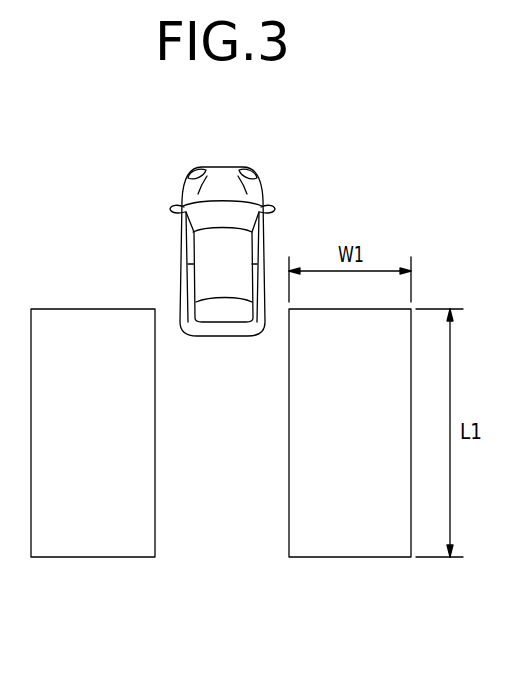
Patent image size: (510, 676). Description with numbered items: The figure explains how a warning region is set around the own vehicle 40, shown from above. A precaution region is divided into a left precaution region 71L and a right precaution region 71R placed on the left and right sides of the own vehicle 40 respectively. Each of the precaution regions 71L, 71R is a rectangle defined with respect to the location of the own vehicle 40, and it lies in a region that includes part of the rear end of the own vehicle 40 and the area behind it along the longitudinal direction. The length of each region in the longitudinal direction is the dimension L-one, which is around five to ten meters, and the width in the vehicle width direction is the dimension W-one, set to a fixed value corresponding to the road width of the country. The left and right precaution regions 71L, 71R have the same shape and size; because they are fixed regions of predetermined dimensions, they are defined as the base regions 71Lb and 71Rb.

The own vehicle 40 is at (215, 167).
The left precaution region 71L is at (117, 476).
The left base region 71Lb is at (91, 557).
The right precaution region 71R is at (376, 475).
The right base region 71Rb is at (349, 557).